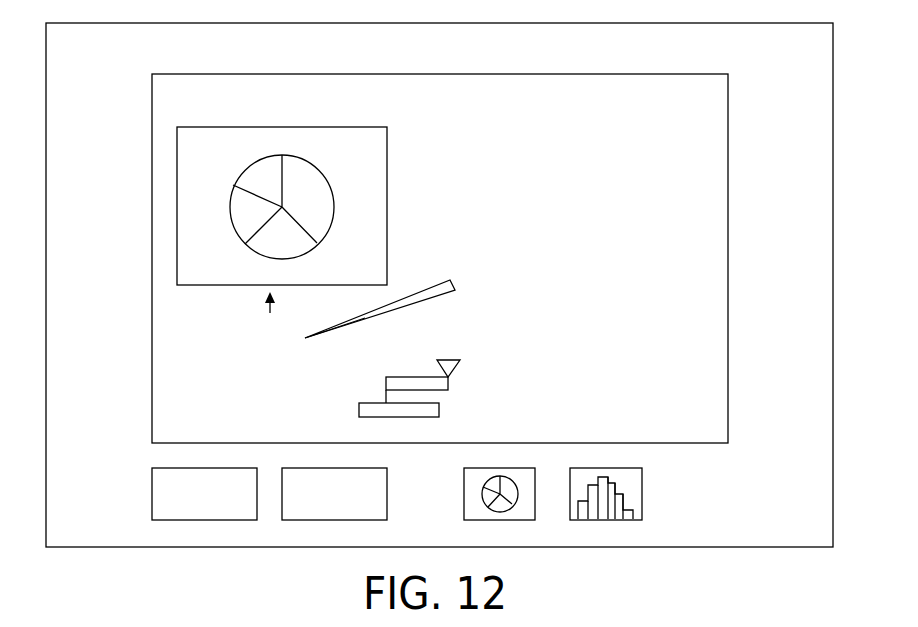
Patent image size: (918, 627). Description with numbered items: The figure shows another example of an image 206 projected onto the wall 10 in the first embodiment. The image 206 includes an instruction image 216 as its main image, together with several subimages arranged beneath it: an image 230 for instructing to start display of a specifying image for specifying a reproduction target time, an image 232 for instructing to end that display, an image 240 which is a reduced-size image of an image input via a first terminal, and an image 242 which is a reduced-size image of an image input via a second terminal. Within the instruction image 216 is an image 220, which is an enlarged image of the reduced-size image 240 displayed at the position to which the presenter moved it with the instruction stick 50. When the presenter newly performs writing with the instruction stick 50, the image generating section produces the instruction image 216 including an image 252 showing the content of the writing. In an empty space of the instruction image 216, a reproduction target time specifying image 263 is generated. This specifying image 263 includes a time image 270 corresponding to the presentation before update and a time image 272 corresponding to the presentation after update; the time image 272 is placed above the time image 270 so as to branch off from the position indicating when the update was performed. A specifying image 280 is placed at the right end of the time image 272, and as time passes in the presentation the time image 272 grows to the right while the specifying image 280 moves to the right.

The wall 10 is at (439, 273).
The image 206 is at (747, 78).
The instruction image 216 is at (671, 61).
The image 220 is at (350, 112).
The image showing the content of writing 252 is at (308, 316).
The instruction stick 50 is at (457, 285).
The reproduction target time specifying image 263 is at (414, 376).
The specifying image 280 is at (438, 360).
The time image (second time region) 272 is at (386, 377).
The time image (first time region) 270 is at (359, 403).
The image for instructing to start display 230 is at (198, 468).
The image for instructing to end display 232 is at (341, 455).
The image 240 is at (498, 468).
The image 242 is at (587, 468).